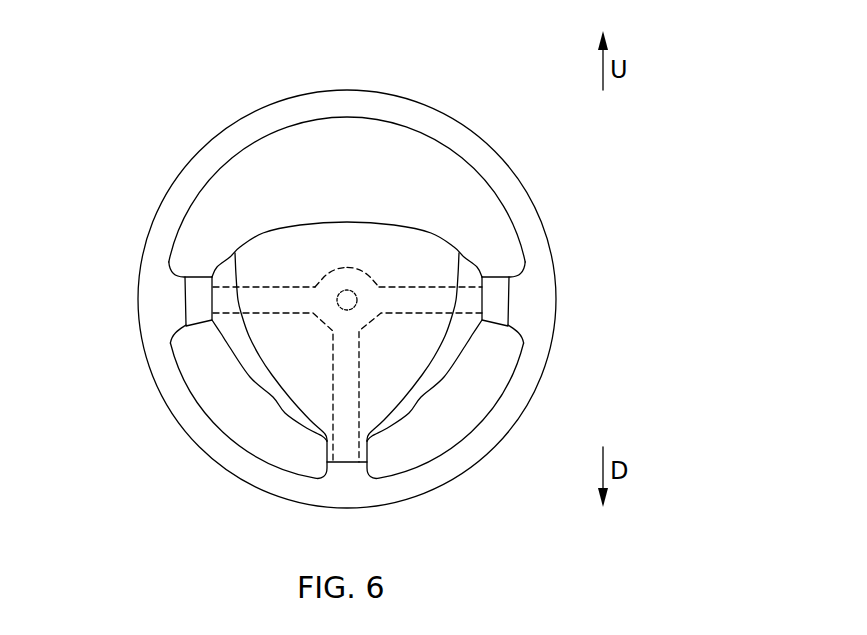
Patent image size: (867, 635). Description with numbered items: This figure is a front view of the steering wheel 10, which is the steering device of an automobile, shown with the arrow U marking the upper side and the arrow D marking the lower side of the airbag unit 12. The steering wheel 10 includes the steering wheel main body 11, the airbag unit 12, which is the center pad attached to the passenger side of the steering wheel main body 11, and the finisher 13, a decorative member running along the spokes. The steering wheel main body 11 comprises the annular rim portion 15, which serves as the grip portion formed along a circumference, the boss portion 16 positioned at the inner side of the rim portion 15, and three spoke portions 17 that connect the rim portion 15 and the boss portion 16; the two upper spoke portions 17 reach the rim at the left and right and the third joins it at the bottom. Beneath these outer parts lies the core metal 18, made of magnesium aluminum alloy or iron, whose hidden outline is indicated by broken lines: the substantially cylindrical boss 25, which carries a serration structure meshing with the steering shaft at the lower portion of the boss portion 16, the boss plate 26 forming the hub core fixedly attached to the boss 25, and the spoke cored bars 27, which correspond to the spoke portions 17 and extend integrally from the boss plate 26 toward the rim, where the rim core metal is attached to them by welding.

The steering wheel 10 is at (368, 62).
The steering wheel main body 11 is at (505, 164).
The airbag unit 12 is at (363, 221).
The finisher 13 is at (267, 398).
The rim portion 15 is at (445, 127).
The boss portion 16 is at (368, 273).
The spoke portions 17 is at (205, 277).
The core metal 18 is at (219, 314).
The boss 25 is at (346, 291).
The boss plate 26 is at (317, 273).
The spoke cored bars 27 is at (263, 287).